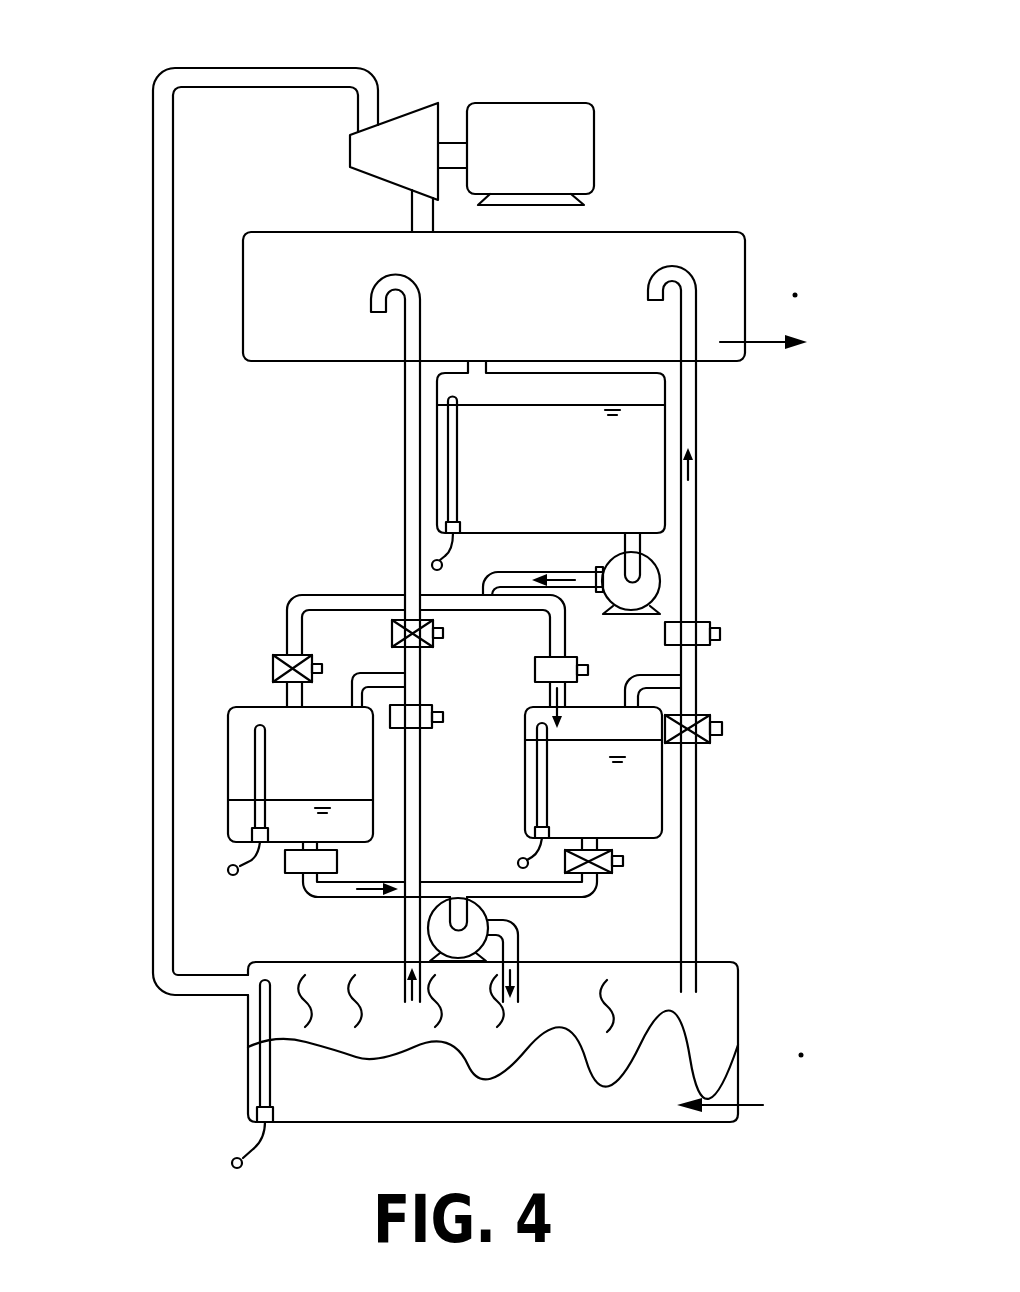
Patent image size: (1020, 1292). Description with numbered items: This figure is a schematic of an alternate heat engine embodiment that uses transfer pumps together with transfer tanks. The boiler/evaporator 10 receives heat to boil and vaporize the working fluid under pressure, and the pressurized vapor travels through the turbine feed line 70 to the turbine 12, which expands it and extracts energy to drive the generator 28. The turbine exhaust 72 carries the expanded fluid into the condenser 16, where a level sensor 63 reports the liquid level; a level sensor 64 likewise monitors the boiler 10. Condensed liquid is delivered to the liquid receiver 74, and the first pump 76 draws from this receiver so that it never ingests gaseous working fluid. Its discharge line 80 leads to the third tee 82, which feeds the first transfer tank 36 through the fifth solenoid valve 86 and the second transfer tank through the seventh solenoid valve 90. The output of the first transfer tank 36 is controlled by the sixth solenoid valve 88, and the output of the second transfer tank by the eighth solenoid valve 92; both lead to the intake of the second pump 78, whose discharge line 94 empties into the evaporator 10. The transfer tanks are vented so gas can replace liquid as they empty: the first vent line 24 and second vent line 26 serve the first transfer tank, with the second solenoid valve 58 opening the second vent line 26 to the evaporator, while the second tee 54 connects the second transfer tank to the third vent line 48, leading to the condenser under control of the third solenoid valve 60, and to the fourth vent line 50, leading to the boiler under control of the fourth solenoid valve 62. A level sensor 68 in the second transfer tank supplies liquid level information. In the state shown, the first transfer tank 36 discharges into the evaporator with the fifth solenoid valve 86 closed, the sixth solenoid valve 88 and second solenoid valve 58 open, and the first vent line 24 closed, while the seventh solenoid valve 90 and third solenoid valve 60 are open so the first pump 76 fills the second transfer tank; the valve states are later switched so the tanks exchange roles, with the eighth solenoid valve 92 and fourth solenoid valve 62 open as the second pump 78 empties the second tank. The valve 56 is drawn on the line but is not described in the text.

The boiler/evaporator 10 is at (558, 1042).
The turbine 12 is at (425, 102).
The condenser 16 is at (401, 280).
The first vent line 24 is at (238, 579).
The second vent line 26 is at (238, 949).
The generator 28 is at (577, 112).
The first transfer tank 36 is at (231, 774).
The third vent line 48 is at (758, 387).
The fourth vent line 50 is at (775, 776).
The second tee 54 is at (697, 737).
The valve 56 is at (250, 589).
The second solenoid valve 58 is at (250, 689).
The third solenoid valve 60 is at (767, 614).
The fourth solenoid valve 62 is at (767, 714).
The level sensor 63 is at (258, 464).
The level sensor 64 is at (165, 1074).
The level sensor 68 is at (693, 795).
The turbine feed line 70 is at (217, 531).
The turbine exhaust 72 is at (245, 179).
The liquid receiver 74 is at (653, 447).
The first pump 76 is at (735, 548).
The second pump 78 is at (272, 915).
The discharge line 80 is at (330, 510).
The third tee 82 is at (311, 569).
The fifth solenoid valve 86 is at (189, 652).
The sixth solenoid valve 88 is at (253, 850).
The seventh solenoid valve 90 is at (702, 636).
The eighth solenoid valve 92 is at (644, 873).
The discharge line 94 is at (678, 948).